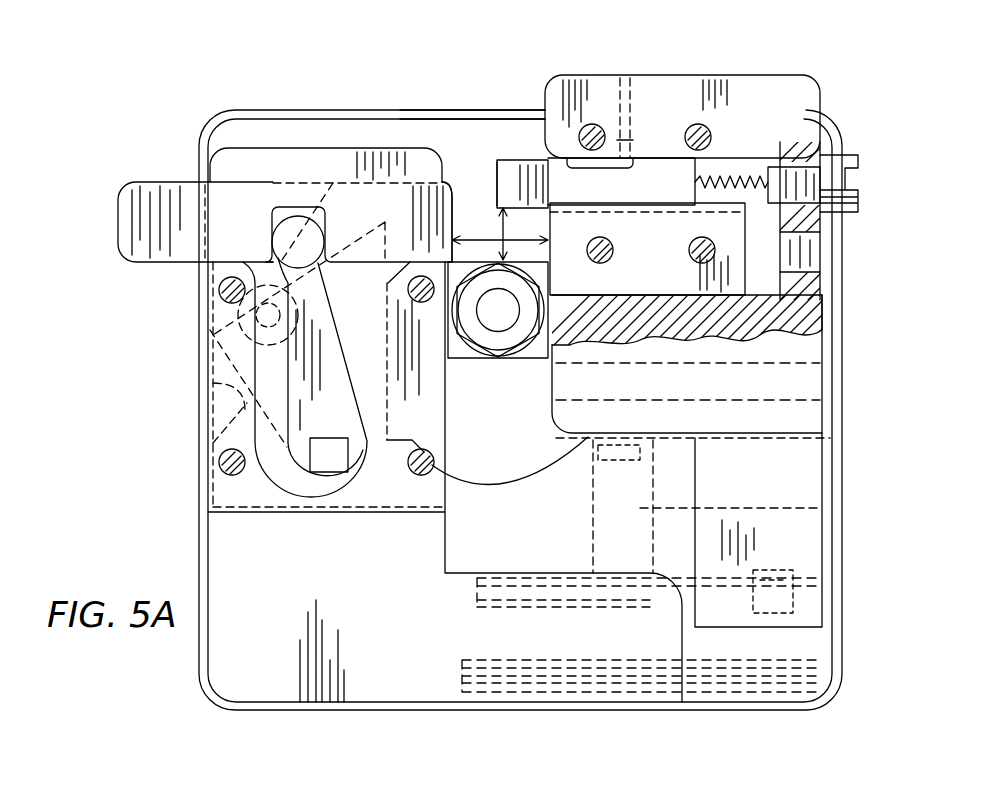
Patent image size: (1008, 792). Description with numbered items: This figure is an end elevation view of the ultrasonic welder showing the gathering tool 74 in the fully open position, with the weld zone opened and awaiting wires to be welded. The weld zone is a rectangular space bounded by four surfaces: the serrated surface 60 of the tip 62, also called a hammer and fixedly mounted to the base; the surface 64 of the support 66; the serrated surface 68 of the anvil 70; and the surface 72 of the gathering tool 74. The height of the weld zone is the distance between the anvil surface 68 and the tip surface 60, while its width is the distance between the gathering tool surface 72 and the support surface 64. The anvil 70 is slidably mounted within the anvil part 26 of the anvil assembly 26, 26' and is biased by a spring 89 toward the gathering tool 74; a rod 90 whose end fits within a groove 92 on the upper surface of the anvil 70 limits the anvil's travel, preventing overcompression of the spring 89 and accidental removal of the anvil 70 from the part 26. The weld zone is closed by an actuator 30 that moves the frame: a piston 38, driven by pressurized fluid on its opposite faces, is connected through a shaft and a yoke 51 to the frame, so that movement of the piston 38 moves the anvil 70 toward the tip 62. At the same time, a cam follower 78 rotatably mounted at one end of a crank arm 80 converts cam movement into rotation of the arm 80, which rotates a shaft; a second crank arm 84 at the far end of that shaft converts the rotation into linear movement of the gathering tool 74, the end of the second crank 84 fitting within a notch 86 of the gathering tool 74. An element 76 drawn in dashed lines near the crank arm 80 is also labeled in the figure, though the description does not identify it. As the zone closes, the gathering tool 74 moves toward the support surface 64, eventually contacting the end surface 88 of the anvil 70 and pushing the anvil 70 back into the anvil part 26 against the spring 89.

The anvil part 26 is at (682, 98).
The anvil assembly part 26' is at (307, 134).
The actuator 30 is at (833, 667).
The piston 38 is at (822, 601).
The yoke 51 is at (213, 488).
The surface of tip 60 is at (447, 297).
The tip 62 is at (533, 355).
The surface of support 64 is at (548, 222).
The support 66 is at (786, 109).
The surface of anvil 68 is at (517, 212).
The anvil 70 is at (533, 122).
The surface of gathering tool 72 is at (453, 183).
The gathering tool 74 is at (348, 197).
The pivot detent 76 is at (213, 378).
The cam follower 78 is at (213, 330).
The crank arm 80 is at (213, 431).
The second crank arm 84 is at (308, 230).
The notch 86 is at (273, 220).
The end surface of anvil 88 is at (492, 186).
The spring 89 is at (734, 180).
The rod 90 is at (633, 140).
The groove 92 is at (597, 158).